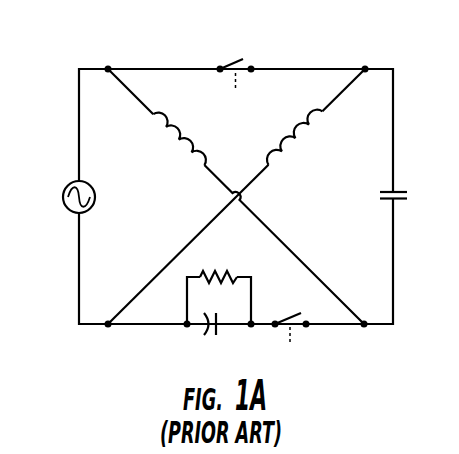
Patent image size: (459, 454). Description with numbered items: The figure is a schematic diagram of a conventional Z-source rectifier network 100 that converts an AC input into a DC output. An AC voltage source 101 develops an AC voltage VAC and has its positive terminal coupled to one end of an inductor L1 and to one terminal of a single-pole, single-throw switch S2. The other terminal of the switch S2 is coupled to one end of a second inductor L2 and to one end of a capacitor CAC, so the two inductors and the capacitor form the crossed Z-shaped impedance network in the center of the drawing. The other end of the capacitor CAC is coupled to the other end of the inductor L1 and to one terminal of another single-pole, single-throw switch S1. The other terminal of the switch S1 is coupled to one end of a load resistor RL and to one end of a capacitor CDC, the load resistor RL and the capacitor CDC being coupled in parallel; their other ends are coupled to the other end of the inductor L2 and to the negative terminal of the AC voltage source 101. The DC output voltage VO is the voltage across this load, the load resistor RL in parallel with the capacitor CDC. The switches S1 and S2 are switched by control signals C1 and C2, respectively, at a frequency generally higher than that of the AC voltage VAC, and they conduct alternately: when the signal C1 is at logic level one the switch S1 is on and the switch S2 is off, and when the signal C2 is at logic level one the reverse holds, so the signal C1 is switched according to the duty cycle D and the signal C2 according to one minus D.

The Z-source rectifier network 100 is at (348, 38).
The AC voltage source 101 is at (86, 184).
The inductor L1 is at (184, 139).
The second inductor L2 is at (287, 137).
The SPST switch S1 is at (288, 303).
The SPST switch S2 is at (234, 50).
The control signal C1 is at (292, 346).
The control signal C2 is at (240, 93).
The capacitor CAC is at (411, 197).
The load resistor RL is at (218, 263).
The capacitor CDC is at (218, 309).
The DC output voltage VO is at (219, 344).
The AC voltage VAC is at (34, 196).